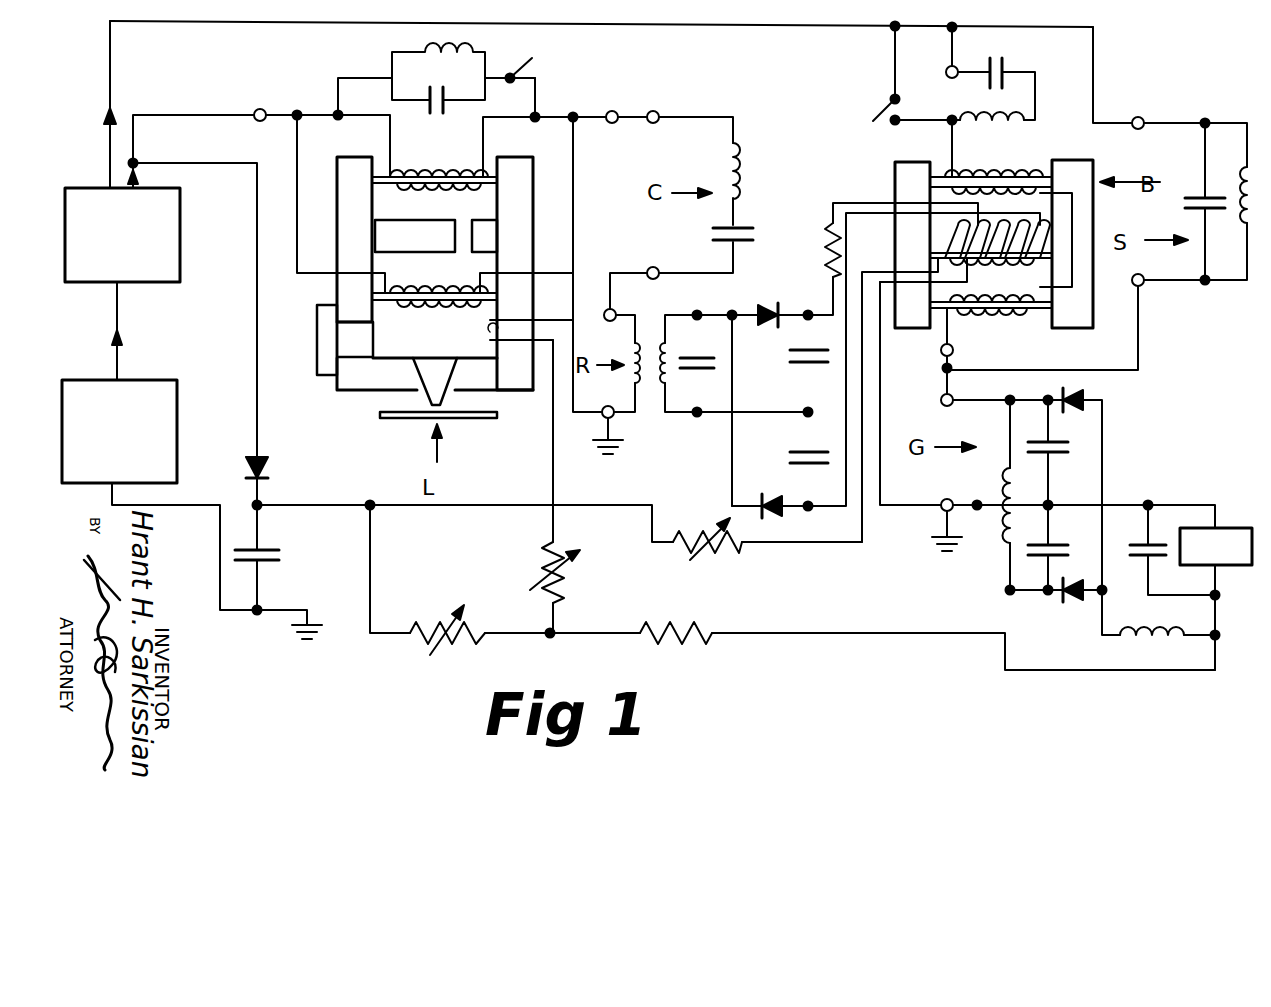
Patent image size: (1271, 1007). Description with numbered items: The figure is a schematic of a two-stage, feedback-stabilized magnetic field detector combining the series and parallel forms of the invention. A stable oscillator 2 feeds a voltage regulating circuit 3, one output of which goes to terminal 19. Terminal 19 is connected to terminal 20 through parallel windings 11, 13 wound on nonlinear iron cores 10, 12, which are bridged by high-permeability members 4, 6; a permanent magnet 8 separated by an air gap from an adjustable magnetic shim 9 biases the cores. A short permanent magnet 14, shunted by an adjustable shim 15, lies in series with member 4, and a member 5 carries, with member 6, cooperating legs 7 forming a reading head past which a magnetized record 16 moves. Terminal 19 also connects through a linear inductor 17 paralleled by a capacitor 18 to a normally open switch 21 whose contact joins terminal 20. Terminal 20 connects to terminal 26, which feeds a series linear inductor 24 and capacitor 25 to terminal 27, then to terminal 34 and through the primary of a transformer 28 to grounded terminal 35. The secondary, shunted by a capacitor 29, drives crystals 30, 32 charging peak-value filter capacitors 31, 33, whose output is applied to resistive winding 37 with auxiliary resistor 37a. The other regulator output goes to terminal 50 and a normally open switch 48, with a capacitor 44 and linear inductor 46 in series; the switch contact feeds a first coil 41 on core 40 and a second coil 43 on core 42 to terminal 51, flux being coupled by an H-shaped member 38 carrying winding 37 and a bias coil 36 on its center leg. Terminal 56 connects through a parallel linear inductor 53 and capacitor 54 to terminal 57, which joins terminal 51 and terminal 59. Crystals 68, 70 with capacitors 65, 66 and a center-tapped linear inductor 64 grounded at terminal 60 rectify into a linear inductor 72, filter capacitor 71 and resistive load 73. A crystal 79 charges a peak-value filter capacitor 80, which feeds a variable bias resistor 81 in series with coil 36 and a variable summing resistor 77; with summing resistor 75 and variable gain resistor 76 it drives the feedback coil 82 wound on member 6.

The stable oscillator 2 is at (165, 380).
The voltage regulating circuit 3 is at (182, 240).
The bridging member 4 is at (337, 200).
The member 5 is at (355, 392).
The bridging member 6 is at (520, 392).
The cooperating legs 7 is at (444, 355).
The permanent magnet 8 is at (418, 206).
The adjustable magnetic shim 9 is at (480, 206).
The nonlinear iron core 10 is at (415, 176).
The winding 11 is at (462, 176).
The nonlinear iron core 12 is at (415, 292).
The winding 13 is at (458, 292).
The short permanent magnet 14 is at (373, 338).
The adjustable shim 15 is at (317, 345).
The magnetized record 16 is at (385, 422).
The linear inductor 17 is at (400, 46).
The capacitor 18 is at (460, 85).
The terminal 19 is at (265, 110).
The terminal 20 is at (616, 111).
The normally open switch 21 is at (530, 60).
The linear inductor 24 is at (748, 165).
The capacitor 25 is at (752, 226).
The terminal 26 is at (658, 111).
The terminal 27 is at (668, 252).
The transformer 28 is at (668, 385).
The capacitor 29 is at (706, 372).
The crystal 30 is at (800, 294).
The peak-value filter capacitor 31 is at (790, 365).
The crystal 32 is at (772, 494).
The peak-value filter capacitor 33 is at (790, 440).
The terminal 34 is at (604, 315).
The terminal 35 is at (615, 416).
The bias coil 36 is at (945, 250).
The resistive winding 37 is at (998, 270).
The auxiliary resistor 37a is at (826, 238).
The H-shaped magnetic member 38 is at (895, 175).
The core 40 is at (985, 175).
The first coil 41 is at (1025, 175).
The core 42 is at (975, 312).
The second coil 43 is at (1020, 312).
The capacitor 44 is at (1005, 62).
The linear inductor 46 is at (990, 110).
The normally open switch 48 is at (875, 108).
The terminal 50 is at (946, 74).
The terminal 51 is at (941, 352).
The linear inductor 53 is at (1240, 185).
The capacitor 54 is at (1218, 212).
The terminal 56 is at (1144, 118).
The terminal 57 is at (1144, 284).
The terminal 59 is at (941, 400).
The terminal 60 is at (941, 508).
The center-tapped linear inductor 64 is at (1000, 488).
The capacitor 65 is at (1060, 455).
The capacitor 66 is at (1062, 558).
The crystal 68 is at (1083, 392).
The crystal 70 is at (1085, 602).
The filter capacitor 71 is at (1160, 560).
The linear inductor 72 is at (1150, 640).
The resistive load 73 is at (1238, 528).
The summing resistor 75 is at (676, 625).
The variable gain resistor 76 is at (562, 580).
The variable summing resistor 77 is at (440, 622).
The crystal 79 is at (270, 462).
The peak-value filter capacitor 80 is at (282, 556).
The variable bias resistor 81 is at (702, 516).
The feedback coil 82 is at (488, 328).